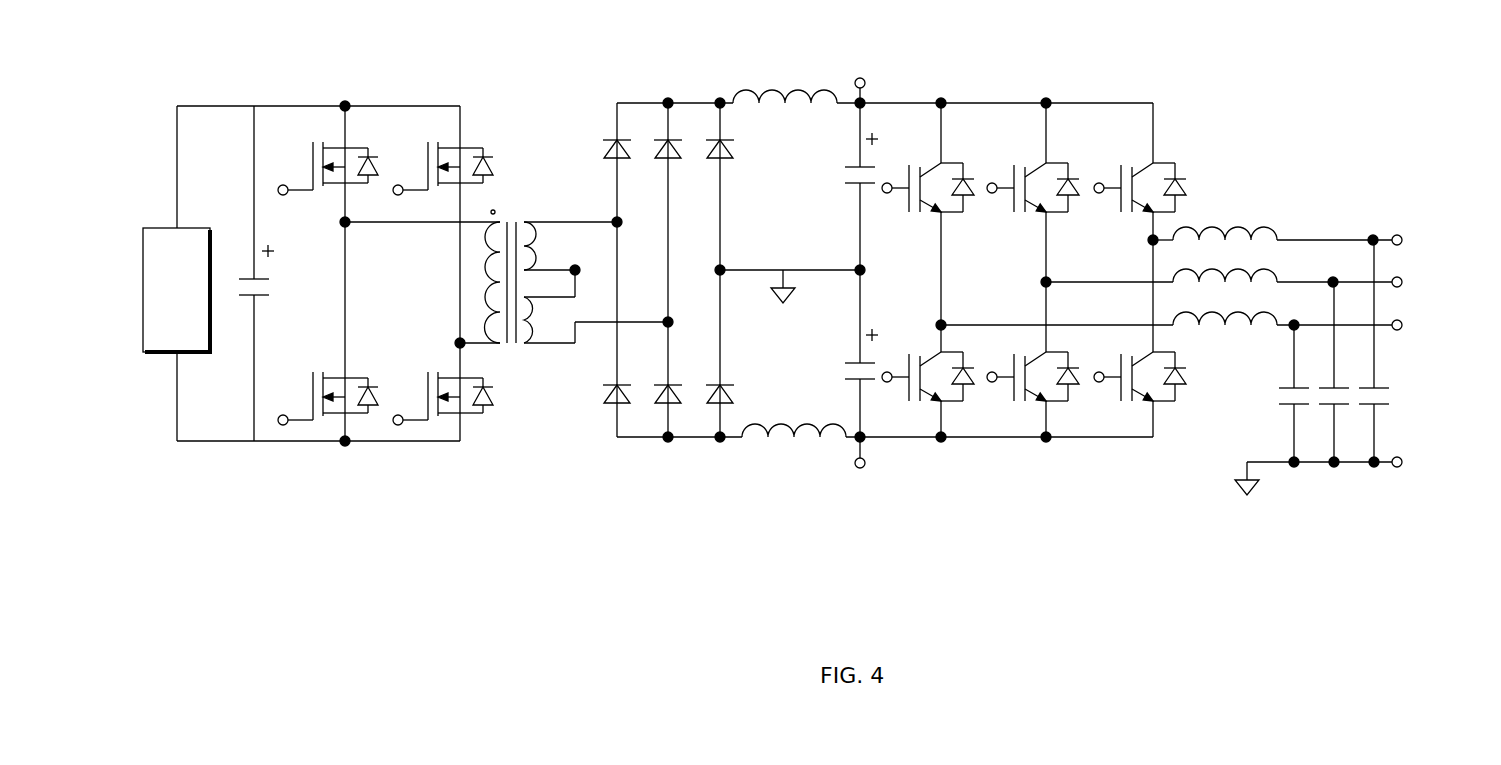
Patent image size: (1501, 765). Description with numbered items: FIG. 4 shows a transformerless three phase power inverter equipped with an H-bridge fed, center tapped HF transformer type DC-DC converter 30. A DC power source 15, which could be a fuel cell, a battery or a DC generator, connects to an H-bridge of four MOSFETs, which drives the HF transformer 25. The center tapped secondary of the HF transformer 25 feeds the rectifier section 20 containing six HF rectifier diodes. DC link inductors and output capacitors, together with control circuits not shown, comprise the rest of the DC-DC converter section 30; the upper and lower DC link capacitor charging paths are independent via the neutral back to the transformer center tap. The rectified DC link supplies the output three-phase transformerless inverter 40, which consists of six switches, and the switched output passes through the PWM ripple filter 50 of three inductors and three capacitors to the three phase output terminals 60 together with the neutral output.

The DC power source 15 is at (155, 356).
The rectifier section 20 is at (657, 315).
The HF transformer 25 is at (543, 392).
The DC-DC converter 30 is at (665, 316).
The three-phase transformerless inverter 40 is at (1175, 467).
The PWM ripple filter 50 is at (1399, 518).
The three-phase output 60 is at (1405, 184).